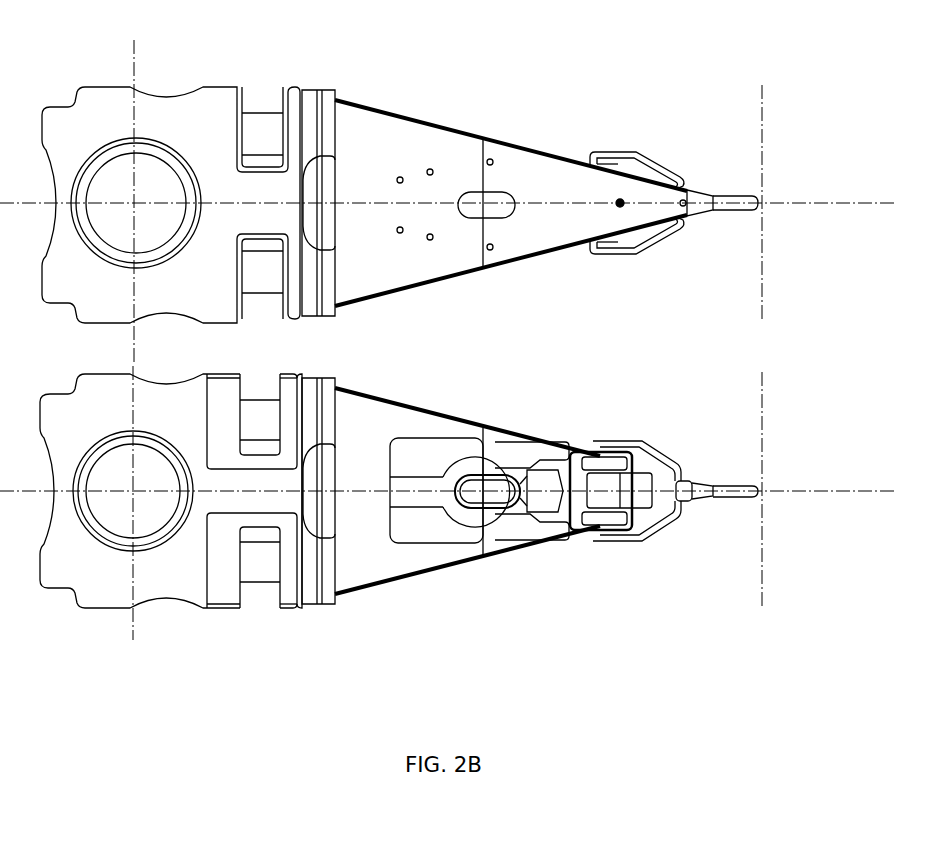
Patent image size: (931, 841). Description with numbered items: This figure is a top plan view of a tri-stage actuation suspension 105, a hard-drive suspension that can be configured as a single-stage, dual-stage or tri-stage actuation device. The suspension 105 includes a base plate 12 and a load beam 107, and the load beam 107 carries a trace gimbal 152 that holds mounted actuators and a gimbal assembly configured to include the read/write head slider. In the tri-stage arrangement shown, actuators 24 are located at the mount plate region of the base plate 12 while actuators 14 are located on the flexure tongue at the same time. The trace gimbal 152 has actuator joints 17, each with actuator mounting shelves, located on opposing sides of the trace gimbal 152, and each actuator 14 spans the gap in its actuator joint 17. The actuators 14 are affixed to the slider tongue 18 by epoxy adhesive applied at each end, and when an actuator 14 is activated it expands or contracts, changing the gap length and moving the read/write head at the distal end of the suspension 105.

The base plate 12 is at (174, 91).
The actuator 24 is at (263, 107).
The suspension 105 is at (530, 176).
The load beam 107 is at (456, 124).
The trace gimbal 152 is at (641, 147).
The slider tongue 18 is at (576, 480).
The actuator 14 is at (601, 461).
The actuator joint 17 is at (618, 450).